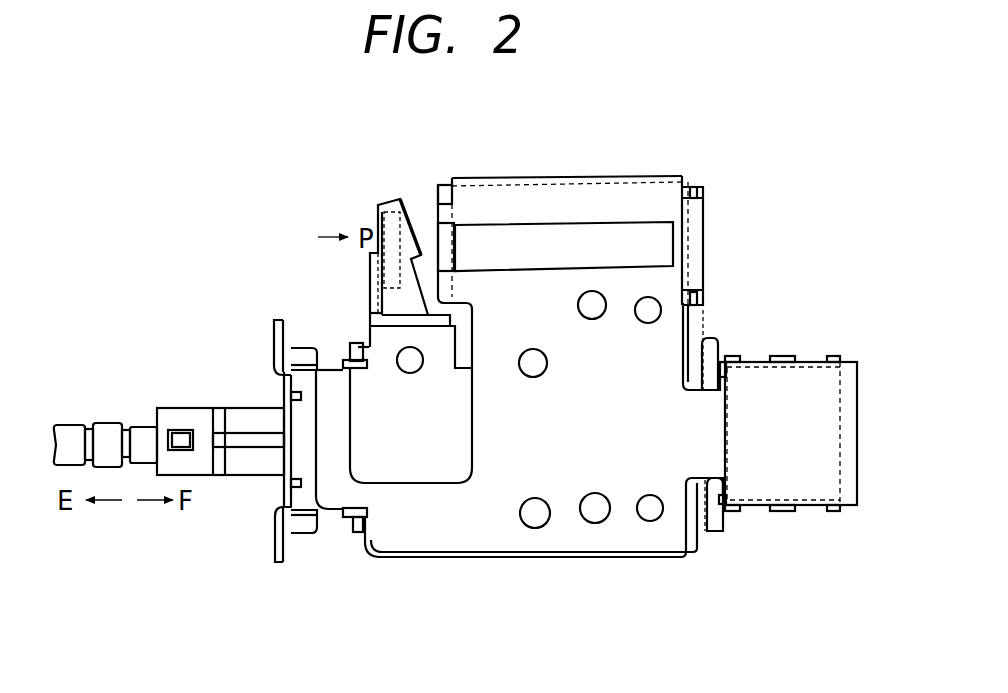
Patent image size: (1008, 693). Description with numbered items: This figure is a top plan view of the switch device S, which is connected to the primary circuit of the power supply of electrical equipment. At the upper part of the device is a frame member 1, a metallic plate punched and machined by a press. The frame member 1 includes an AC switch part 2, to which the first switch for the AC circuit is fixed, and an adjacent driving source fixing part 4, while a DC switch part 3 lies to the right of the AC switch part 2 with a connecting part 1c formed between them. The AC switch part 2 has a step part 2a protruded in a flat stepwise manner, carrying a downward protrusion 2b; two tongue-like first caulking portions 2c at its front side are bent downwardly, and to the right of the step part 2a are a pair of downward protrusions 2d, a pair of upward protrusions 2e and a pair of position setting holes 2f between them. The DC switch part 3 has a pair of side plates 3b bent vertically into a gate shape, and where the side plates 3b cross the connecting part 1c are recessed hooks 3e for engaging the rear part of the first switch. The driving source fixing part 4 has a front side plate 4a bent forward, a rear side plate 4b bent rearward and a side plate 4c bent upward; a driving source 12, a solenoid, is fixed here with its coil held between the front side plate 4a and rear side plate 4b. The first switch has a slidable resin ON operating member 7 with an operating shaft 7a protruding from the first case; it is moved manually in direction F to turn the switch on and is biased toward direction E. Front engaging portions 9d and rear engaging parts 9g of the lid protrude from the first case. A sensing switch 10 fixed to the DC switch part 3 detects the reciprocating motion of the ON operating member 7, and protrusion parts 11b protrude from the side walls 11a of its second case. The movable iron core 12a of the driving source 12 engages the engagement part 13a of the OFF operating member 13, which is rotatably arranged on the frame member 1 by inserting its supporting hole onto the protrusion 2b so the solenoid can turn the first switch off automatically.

The switch device S is at (702, 148).
The frame member 1 is at (433, 530).
The connecting part 1c is at (280, 372).
The AC switch part 2 is at (481, 490).
The step part 2a is at (400, 435).
The protrusion 2b is at (368, 327).
The first caulking portions 2c is at (345, 362).
The protrusions 2d is at (533, 363).
The protrusions 2e is at (648, 310).
The position setting holes 2f is at (592, 305).
The DC switch part 3 is at (817, 410).
The side plates 3b is at (807, 358).
The hooks 3e is at (725, 360).
The driving source fixing part 4 is at (629, 203).
The front side plate 4a is at (441, 188).
The rear side plate 4b is at (704, 238).
The side plate 4c is at (570, 174).
The ON operating member 7 is at (190, 405).
The operating shaft 7a is at (143, 423).
The front engaging portions 9d is at (288, 348).
The rear engaging parts 9g is at (710, 340).
The sensing switch 10 is at (848, 445).
The side walls 11a is at (822, 358).
The protrusion parts 11b is at (783, 357).
The driving source 12 is at (506, 196).
The movable iron core 12a is at (424, 235).
The OFF operating member 13 is at (368, 268).
The engagement part 13a is at (372, 206).